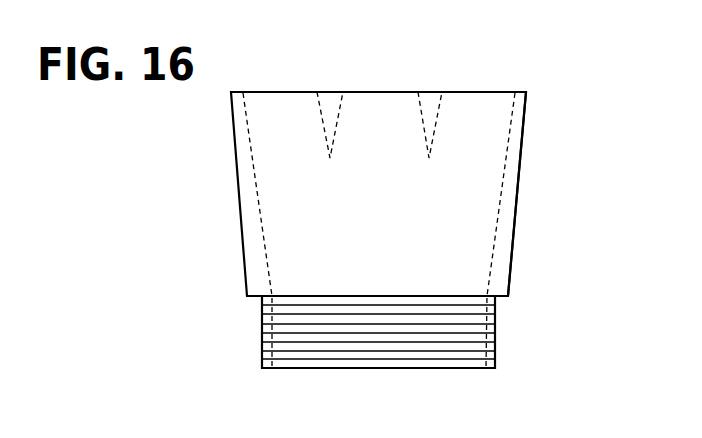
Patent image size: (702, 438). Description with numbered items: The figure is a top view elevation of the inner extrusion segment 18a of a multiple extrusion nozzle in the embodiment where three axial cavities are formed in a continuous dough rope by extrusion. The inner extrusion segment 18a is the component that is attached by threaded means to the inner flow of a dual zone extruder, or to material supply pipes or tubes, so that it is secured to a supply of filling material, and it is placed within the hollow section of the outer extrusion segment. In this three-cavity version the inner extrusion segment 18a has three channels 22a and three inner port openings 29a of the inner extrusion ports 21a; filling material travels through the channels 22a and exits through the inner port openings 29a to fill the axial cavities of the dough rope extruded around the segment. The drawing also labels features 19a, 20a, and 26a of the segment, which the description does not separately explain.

The inner extrusion segment 18a is at (546, 224).
The side wall 19a is at (521, 172).
The threaded skirt base 20a is at (260, 345).
The inner extrusion port 21a is at (328, 89).
The channel 22a is at (282, 172).
The bottom edge 26a is at (394, 373).
The inner port opening 29a is at (282, 89).